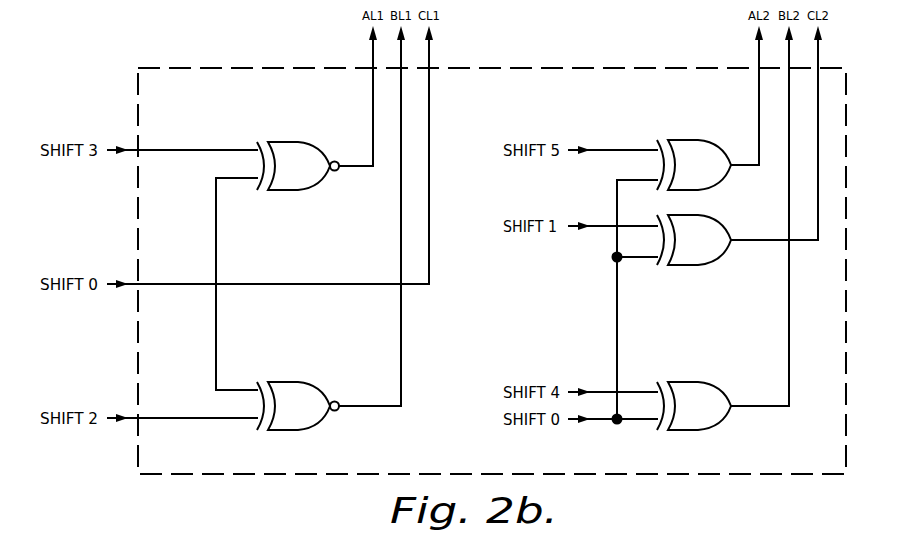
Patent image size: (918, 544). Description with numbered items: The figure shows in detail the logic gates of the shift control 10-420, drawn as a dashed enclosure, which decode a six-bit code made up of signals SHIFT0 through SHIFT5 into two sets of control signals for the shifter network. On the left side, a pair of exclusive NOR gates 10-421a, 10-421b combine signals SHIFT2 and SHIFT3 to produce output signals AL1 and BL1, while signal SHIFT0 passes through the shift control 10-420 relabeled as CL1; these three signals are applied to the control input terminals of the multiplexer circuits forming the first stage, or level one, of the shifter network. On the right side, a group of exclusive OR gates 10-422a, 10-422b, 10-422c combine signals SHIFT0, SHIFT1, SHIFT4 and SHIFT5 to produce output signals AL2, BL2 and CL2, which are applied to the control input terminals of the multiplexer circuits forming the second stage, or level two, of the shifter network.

The shift control 10-420 is at (492, 271).
The exclusive NOR gate 10-421a is at (318, 363).
The exclusive NOR gate 10-421b is at (292, 140).
The exclusive OR gate 10-422a is at (720, 123).
The exclusive OR gate 10-422b is at (730, 363).
The exclusive OR gate 10-422c is at (700, 214).